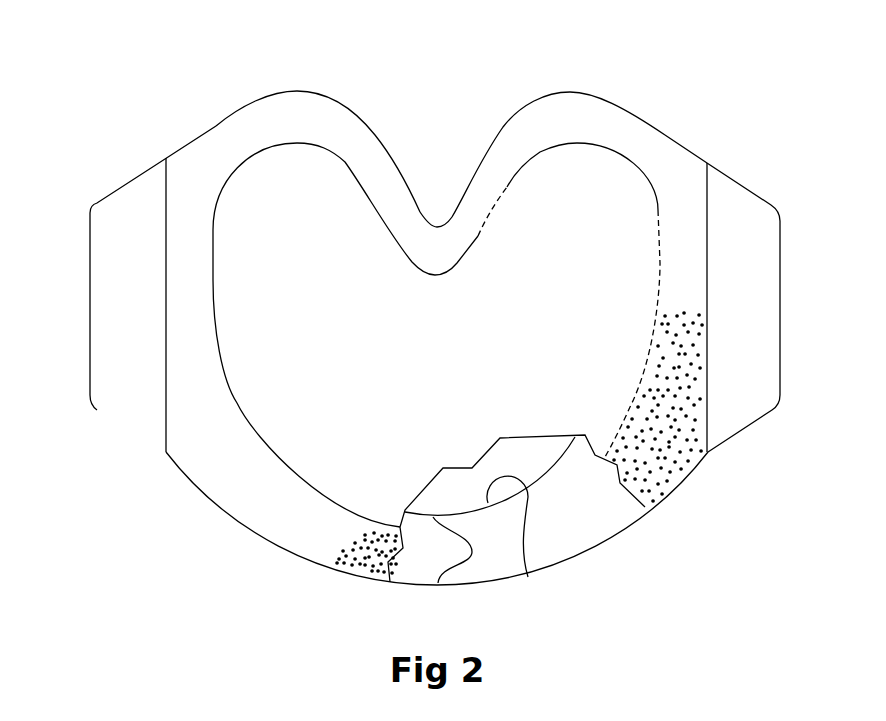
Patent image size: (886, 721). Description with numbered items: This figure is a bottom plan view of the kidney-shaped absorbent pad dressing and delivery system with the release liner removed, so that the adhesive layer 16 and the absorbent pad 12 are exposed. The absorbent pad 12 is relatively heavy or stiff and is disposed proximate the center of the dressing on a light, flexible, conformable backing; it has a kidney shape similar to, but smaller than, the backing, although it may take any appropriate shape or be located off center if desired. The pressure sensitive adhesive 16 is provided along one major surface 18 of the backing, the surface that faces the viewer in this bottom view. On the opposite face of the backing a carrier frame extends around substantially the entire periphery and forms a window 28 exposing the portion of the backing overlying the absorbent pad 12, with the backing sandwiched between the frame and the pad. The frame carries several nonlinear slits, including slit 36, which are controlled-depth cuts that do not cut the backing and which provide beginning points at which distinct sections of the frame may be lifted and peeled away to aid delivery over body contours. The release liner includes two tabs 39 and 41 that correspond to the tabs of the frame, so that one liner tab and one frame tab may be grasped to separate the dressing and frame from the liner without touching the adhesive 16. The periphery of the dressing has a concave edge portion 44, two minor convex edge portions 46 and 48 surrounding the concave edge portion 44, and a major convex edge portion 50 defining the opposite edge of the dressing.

The absorbent pad 12 is at (436, 335).
The pressure sensitive adhesive 16 is at (668, 457).
The major surface of the backing 18 is at (308, 542).
The window 28 is at (528, 577).
The nonlinear slit 36 is at (452, 568).
The release liner tab 39 is at (753, 360).
The release liner tab 41 is at (113, 372).
The concave edge portion 44 is at (438, 223).
The minor convex edge portion 46 is at (571, 91).
The minor convex edge portion 48 is at (298, 91).
The major convex edge portion 50 is at (408, 585).